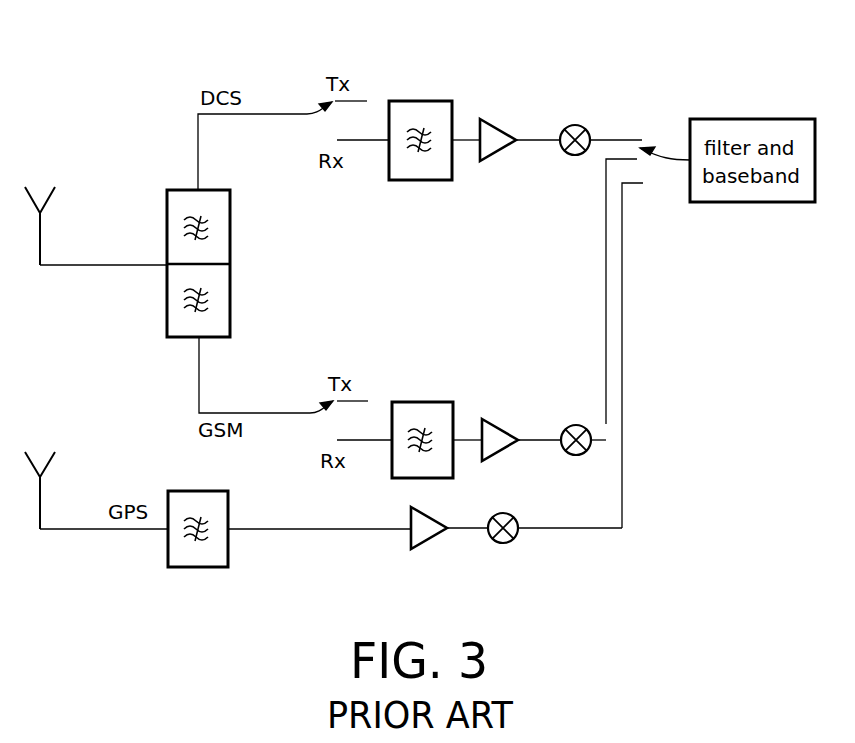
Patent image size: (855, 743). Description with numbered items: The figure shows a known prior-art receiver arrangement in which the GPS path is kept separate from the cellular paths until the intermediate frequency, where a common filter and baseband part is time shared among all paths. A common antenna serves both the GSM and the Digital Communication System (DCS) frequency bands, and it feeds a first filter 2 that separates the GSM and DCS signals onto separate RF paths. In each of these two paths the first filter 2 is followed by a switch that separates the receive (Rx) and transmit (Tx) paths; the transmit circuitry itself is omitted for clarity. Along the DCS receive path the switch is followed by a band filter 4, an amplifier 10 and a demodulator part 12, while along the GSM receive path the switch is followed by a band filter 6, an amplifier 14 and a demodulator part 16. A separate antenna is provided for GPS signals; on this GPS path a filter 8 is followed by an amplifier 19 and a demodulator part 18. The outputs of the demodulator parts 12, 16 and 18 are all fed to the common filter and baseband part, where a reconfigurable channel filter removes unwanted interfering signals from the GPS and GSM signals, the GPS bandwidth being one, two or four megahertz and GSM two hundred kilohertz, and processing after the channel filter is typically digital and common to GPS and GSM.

The first filter 2 is at (230, 224).
The band filter 4 is at (420, 101).
The band filter 6 is at (422, 402).
The filter 8 is at (197, 567).
The amplifier 10 is at (492, 119).
The demodulator part 12 is at (577, 125).
The amplifier 14 is at (497, 421).
The demodulator part 16 is at (578, 425).
The demodulator part 18 is at (504, 544).
The amplifier 19 is at (427, 549).